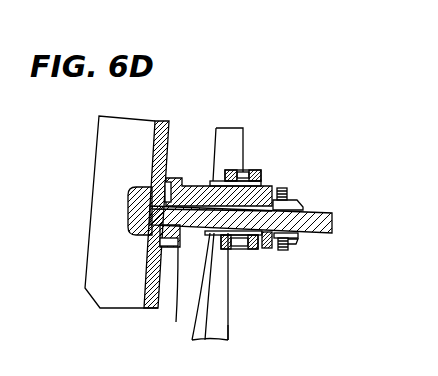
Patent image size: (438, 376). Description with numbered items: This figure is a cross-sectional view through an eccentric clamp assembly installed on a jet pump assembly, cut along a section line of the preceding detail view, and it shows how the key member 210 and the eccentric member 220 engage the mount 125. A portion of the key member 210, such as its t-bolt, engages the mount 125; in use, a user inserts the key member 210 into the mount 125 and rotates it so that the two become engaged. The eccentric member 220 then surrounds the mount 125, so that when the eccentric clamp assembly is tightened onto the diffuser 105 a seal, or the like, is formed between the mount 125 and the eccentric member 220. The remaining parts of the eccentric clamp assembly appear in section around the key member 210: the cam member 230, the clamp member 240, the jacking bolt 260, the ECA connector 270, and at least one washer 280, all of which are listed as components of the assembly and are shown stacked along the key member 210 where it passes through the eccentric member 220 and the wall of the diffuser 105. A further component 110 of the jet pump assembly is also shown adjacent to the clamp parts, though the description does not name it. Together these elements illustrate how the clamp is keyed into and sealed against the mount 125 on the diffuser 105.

The diffuser 105 is at (98, 258).
The base plate 110 is at (229, 330).
The mount 125 is at (152, 313).
The key member 210 is at (332, 222).
The eccentric member 220 is at (198, 182).
The cam member 230 is at (196, 340).
The clamp member 240 is at (262, 167).
The jacking bolt 260 is at (258, 250).
The ECA connector 270 is at (302, 203).
The washer 280 is at (280, 257).